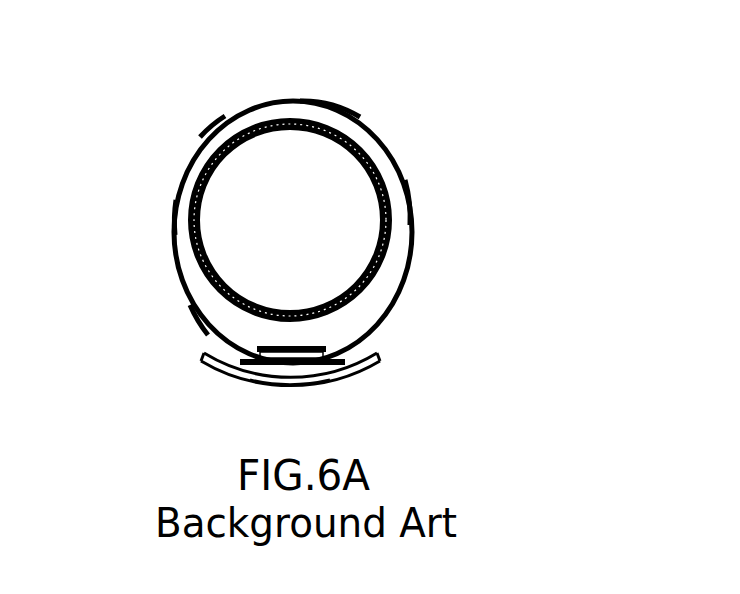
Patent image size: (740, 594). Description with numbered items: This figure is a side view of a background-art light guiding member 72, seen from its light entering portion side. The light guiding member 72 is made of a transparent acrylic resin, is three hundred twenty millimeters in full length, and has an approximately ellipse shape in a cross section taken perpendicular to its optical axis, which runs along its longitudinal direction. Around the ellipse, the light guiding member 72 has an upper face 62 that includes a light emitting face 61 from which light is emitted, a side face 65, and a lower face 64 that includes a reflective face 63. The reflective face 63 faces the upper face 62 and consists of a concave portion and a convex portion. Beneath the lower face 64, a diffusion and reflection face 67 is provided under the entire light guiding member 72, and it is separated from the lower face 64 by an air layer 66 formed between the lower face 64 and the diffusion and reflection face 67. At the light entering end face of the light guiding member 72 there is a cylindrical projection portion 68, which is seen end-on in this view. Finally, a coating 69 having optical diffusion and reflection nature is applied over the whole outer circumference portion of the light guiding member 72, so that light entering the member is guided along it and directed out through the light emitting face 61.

The light emitting face 61 is at (300, 100).
The upper face 62 is at (340, 107).
The reflective face 63 is at (298, 348).
The lower face 64 is at (197, 325).
The side face 65 is at (172, 216).
The air layer 66 is at (372, 347).
The diffusion and reflection face 67 is at (312, 387).
The cylindrical projection portion 68 is at (261, 122).
The coating 69 is at (203, 134).
The light guiding member 72 is at (412, 203).